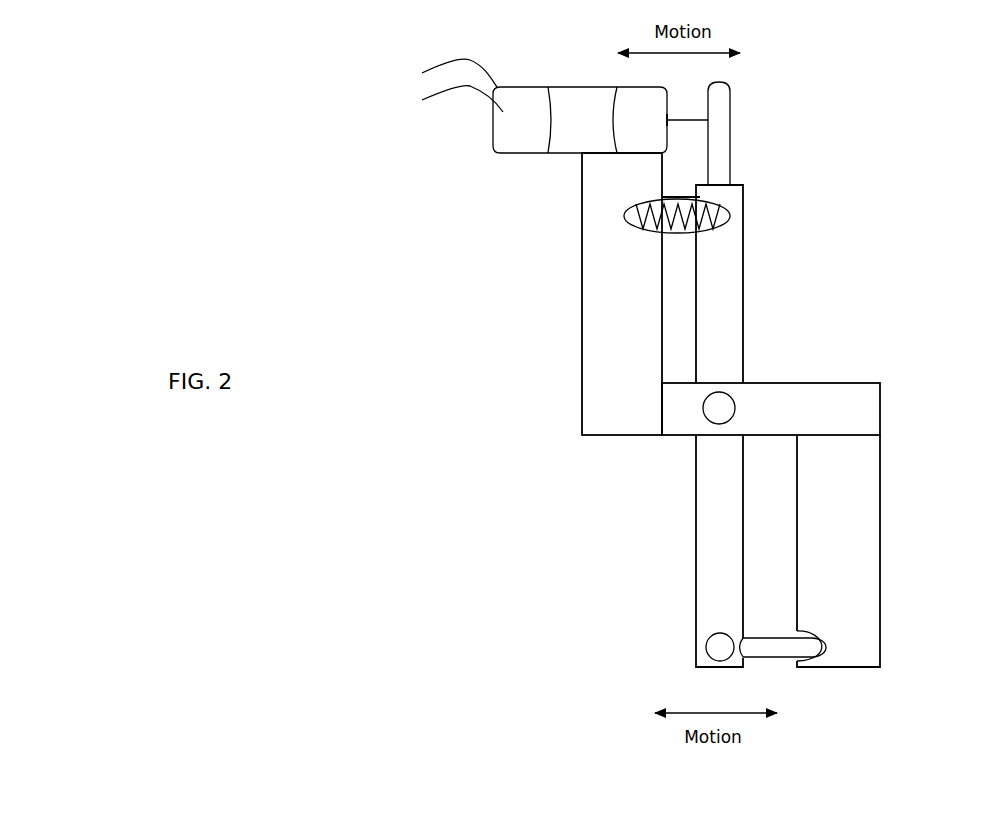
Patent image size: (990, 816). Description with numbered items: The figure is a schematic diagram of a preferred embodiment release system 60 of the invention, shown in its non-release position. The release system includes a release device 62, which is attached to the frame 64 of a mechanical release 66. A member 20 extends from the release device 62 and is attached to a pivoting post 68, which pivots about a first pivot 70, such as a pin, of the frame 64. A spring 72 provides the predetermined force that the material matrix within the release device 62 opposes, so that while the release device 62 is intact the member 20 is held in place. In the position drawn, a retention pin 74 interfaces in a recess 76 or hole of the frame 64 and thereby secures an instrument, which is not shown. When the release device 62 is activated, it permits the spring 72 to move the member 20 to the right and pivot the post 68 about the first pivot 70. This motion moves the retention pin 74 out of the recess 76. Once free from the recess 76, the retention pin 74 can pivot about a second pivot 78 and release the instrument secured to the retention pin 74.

The member 20 is at (742, 120).
The release system 60 is at (398, 214).
The release device 62 is at (593, 97).
The frame 64 is at (600, 335).
The mechanical release 66 is at (805, 373).
The pivoting post 68 is at (732, 333).
The first pivot 70 is at (703, 423).
The spring 72 is at (730, 228).
The retention pin 74 is at (787, 661).
The recess 76 is at (832, 641).
The second pivot 78 is at (708, 632).